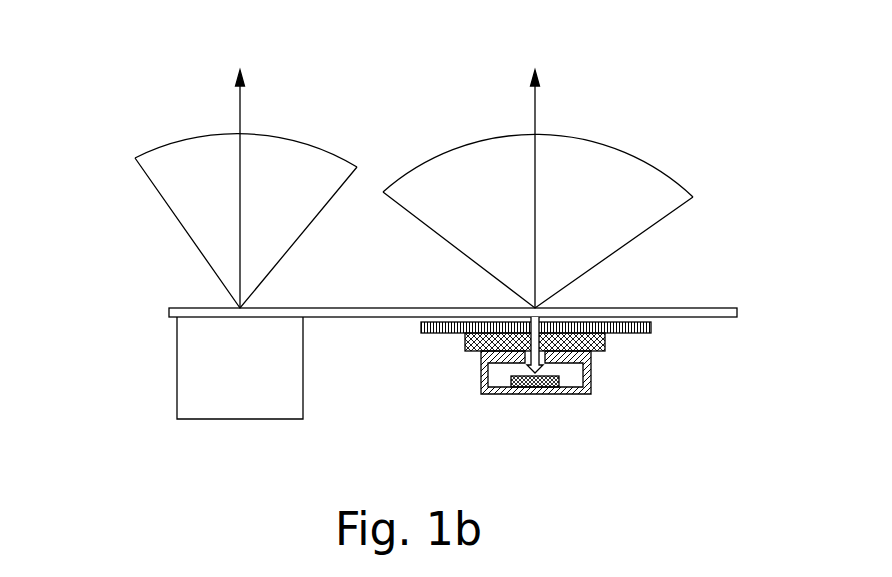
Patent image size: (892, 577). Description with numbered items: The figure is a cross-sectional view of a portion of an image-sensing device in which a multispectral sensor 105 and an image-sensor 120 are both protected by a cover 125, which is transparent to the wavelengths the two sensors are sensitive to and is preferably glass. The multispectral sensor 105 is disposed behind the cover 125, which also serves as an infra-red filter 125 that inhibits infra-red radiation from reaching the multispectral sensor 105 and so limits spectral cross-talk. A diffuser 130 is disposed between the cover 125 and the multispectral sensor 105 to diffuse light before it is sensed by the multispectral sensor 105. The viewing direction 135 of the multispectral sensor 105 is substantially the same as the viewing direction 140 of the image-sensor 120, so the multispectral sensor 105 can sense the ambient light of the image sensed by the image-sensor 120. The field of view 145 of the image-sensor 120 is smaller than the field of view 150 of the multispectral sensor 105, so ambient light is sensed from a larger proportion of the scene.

The multispectral sensor 105 is at (557, 388).
The image-sensor 120 is at (210, 377).
The cover 125 is at (357, 317).
The diffuser 130 is at (435, 332).
The viewing direction of the multispectral sensor 135 is at (535, 173).
The viewing direction of the image-sensor 140 is at (241, 173).
The field of view of the image-sensor 145 is at (183, 172).
The field of view of the multispectral sensor 150 is at (610, 215).